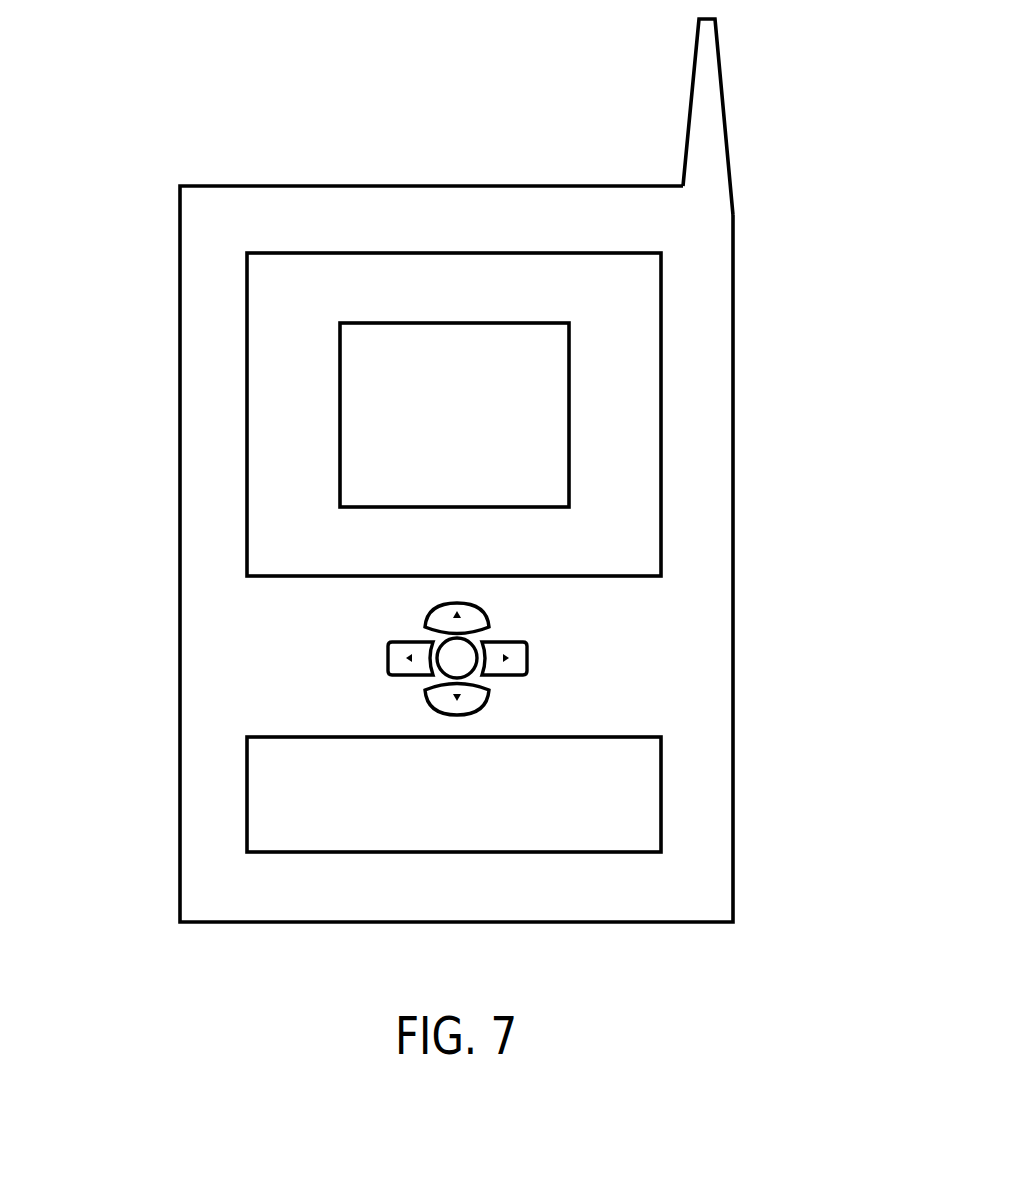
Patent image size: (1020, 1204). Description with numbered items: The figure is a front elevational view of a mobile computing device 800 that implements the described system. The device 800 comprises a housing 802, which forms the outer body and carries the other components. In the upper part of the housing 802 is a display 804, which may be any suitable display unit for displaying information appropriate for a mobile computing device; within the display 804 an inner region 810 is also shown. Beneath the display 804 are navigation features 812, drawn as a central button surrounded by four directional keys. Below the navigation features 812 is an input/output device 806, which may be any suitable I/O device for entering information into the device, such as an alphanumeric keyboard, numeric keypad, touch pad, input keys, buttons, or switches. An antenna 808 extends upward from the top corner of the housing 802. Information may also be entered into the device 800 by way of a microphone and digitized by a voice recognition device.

The device 800 is at (172, 119).
The housing 802 is at (179, 647).
The display 804 is at (661, 312).
The input/output (I/O) device 806 is at (661, 793).
The antenna 808 is at (691, 104).
The display window 810 is at (455, 323).
The navigation features 812 is at (566, 660).